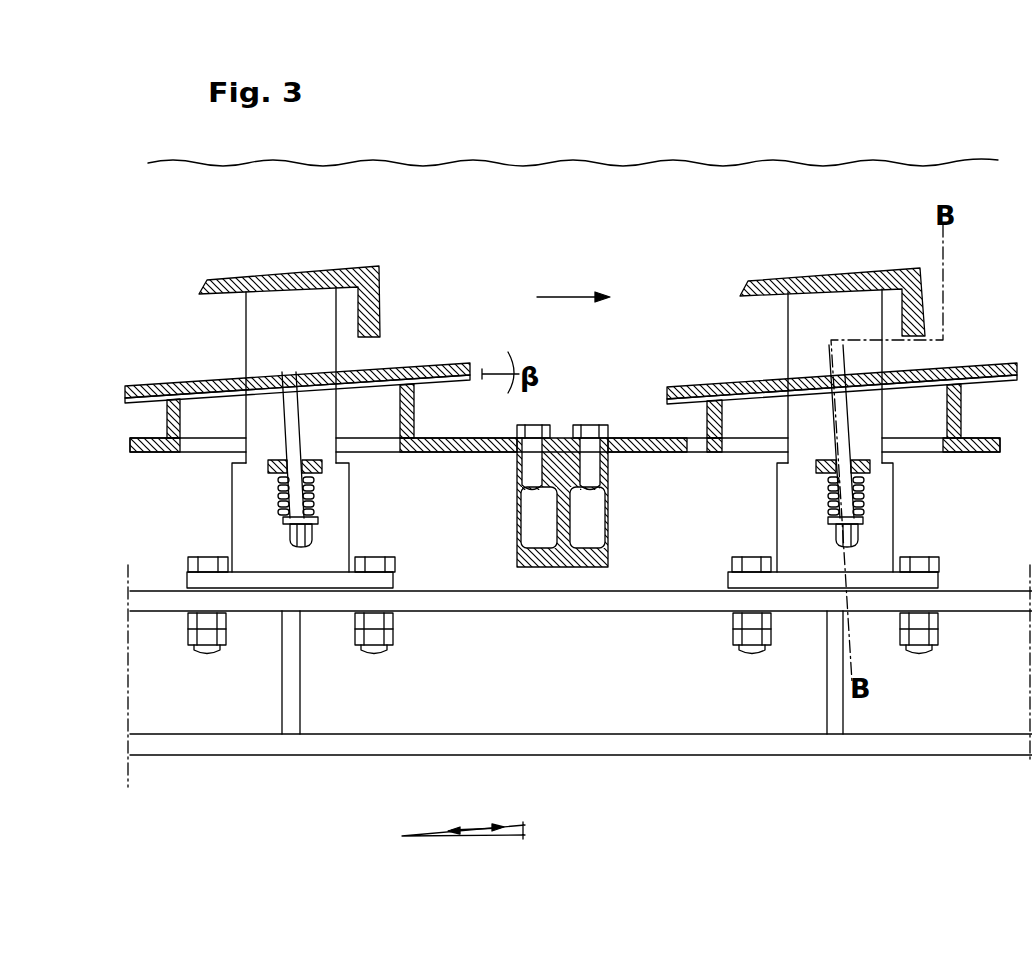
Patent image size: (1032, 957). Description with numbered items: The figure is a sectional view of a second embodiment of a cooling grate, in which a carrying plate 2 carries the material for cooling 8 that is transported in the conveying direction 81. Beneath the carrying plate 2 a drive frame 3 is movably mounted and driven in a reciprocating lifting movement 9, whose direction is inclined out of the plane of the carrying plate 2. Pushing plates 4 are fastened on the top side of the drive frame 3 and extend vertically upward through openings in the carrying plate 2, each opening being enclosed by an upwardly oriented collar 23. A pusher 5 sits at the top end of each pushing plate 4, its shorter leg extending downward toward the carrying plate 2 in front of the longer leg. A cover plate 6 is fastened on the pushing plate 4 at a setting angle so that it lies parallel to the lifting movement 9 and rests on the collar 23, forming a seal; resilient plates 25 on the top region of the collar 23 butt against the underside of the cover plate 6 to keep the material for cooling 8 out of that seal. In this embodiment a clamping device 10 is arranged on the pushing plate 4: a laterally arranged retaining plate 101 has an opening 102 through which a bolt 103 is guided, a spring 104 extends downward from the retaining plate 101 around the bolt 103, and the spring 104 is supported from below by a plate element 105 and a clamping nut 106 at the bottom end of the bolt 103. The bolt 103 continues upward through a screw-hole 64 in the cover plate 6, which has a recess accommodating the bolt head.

The carrying plate 2 is at (473, 458).
The drive frame 3 is at (740, 703).
The pushing plate 4 is at (803, 542).
The pusher 5 is at (911, 274).
The cover plate 6 is at (701, 386).
The material for cooling 8 is at (465, 217).
The lifting movement 9 is at (478, 826).
The clamping device 10 is at (813, 427).
The collar 23 is at (688, 443).
The resilient plates 25 is at (413, 396).
The screw-hole 64 is at (841, 395).
The conveying direction 81 is at (558, 296).
The retaining plate 101 is at (813, 463).
The opening 102 is at (823, 478).
The bolt 103 is at (841, 412).
The spring 104 is at (857, 483).
The plate element 105 is at (861, 520).
The clamping nut 106 is at (860, 528).